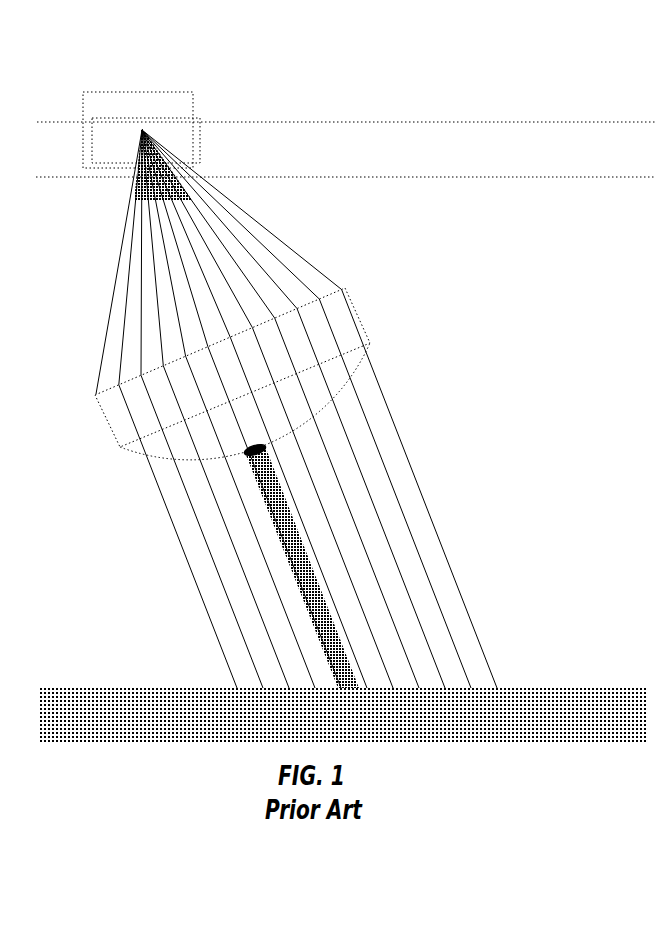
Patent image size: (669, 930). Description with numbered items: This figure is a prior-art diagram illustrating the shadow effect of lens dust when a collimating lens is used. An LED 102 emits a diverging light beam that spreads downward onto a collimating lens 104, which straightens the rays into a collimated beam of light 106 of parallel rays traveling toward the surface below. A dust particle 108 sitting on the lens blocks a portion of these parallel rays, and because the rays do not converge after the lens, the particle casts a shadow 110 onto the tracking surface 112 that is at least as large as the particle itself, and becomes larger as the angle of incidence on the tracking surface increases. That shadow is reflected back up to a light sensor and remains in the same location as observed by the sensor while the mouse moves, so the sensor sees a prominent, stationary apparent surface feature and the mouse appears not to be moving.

The LED 102 is at (143, 129).
The collimating lens 104 is at (332, 297).
The collimated beam of light 106 is at (365, 378).
The dust particle 108 is at (273, 448).
The shadow 110 is at (285, 515).
The tracking surface 112 is at (507, 698).